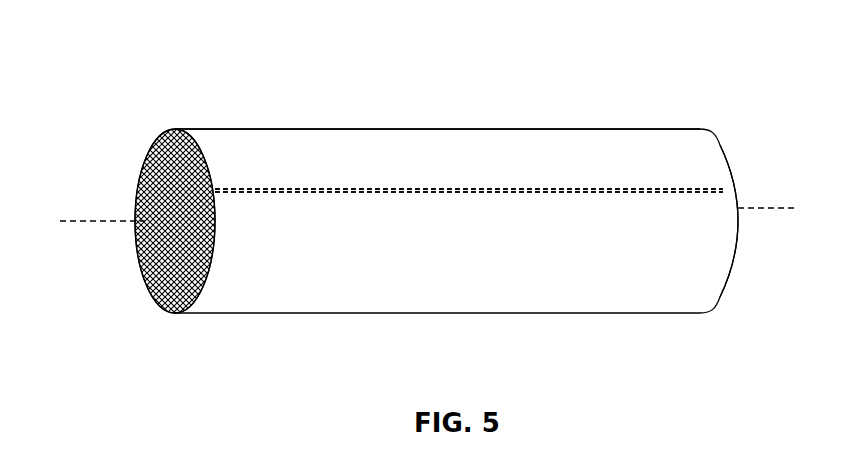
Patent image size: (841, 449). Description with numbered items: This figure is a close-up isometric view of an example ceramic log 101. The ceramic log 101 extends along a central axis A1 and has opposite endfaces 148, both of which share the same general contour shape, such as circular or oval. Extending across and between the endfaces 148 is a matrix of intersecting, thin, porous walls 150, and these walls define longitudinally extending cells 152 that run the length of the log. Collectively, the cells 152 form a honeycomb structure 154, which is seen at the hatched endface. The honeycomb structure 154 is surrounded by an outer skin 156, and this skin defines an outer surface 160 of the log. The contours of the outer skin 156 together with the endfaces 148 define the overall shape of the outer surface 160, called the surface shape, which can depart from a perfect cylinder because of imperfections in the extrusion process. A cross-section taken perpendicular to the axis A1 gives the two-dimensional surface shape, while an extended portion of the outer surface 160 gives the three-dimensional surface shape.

The ceramic log 101 is at (93, 52).
The endfaces 148 is at (140, 267).
The porous walls 150 is at (417, 185).
The cells 152 is at (329, 181).
The honeycomb structure 154 is at (134, 186).
The outer skin 156 is at (577, 128).
The outer surface 160 is at (364, 126).
The central axis A1 is at (770, 208).